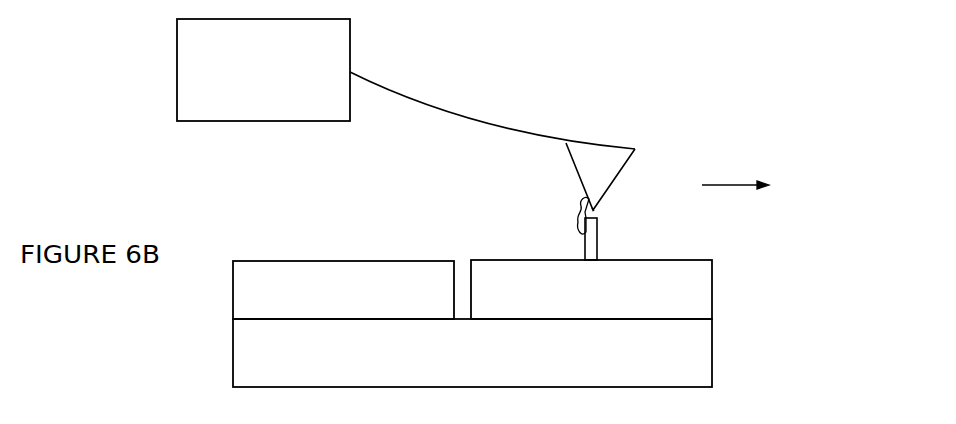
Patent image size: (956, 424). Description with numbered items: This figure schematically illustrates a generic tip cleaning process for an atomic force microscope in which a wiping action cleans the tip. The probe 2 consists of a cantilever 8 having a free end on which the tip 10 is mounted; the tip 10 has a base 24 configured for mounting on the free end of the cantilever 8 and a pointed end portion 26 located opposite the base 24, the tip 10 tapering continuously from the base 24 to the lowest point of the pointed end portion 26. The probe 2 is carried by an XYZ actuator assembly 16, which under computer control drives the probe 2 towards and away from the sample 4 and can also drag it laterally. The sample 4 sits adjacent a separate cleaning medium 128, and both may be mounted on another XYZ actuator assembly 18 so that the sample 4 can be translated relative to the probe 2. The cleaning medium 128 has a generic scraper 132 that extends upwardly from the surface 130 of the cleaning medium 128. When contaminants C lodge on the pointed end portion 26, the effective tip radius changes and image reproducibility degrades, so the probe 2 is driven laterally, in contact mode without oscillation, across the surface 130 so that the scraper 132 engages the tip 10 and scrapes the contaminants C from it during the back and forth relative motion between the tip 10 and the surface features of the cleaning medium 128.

The probe 2 is at (476, 85).
The sample 4 is at (233, 292).
The cantilever 8 is at (397, 90).
The tip 10 is at (519, 131).
The XYZ actuator assembly 16 is at (350, 43).
The XYZ actuator assembly 18 is at (233, 351).
The base 24 is at (620, 175).
The pointed end portion 26 is at (594, 209).
The contaminants C is at (580, 214).
The cleaning medium 128 is at (712, 292).
The surface 130 is at (631, 266).
The scraper 132 is at (598, 248).